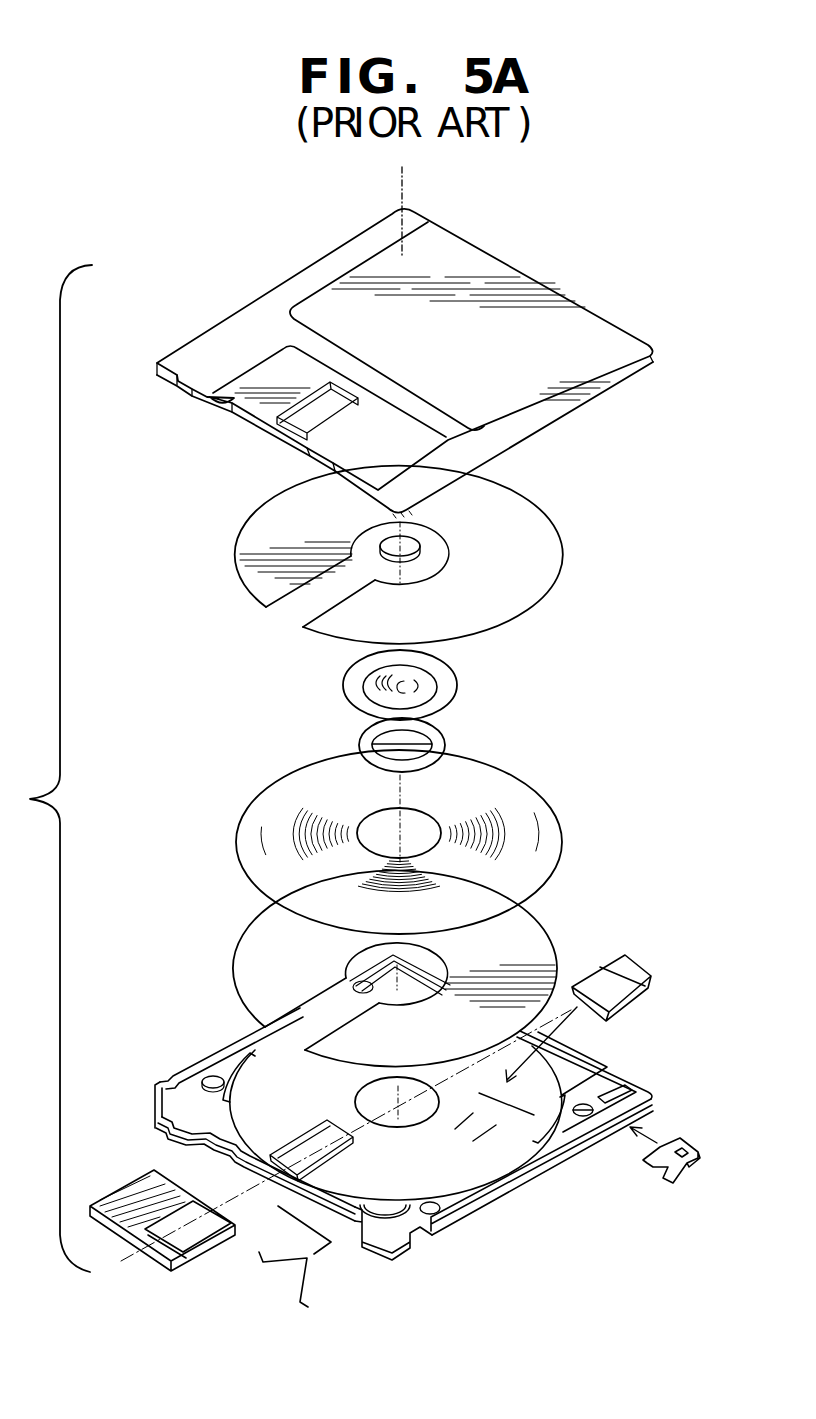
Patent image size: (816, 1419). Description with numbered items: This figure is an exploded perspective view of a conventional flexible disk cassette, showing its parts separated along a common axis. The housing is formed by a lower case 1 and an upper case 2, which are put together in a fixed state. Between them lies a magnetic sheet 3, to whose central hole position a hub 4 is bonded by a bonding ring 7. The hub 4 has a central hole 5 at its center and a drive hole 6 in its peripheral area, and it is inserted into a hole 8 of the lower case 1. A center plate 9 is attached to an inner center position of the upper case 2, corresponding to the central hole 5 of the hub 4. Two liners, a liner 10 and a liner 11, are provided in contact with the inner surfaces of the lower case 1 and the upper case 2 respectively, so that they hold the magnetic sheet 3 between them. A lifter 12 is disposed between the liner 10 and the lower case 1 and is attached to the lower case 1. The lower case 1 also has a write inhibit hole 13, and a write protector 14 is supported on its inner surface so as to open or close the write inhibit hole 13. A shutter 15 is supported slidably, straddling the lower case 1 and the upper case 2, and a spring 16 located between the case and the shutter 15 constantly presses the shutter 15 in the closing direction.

The lower case 1 is at (575, 1156).
The upper case 2 is at (540, 288).
The magnetic sheet 3 is at (545, 813).
The hub 4 is at (453, 691).
The central hole 5 is at (390, 689).
The drive hole 6 is at (410, 671).
The bonding ring 7 is at (360, 741).
The hole 8 is at (430, 1120).
The center plate 9 is at (416, 545).
The liner 10 is at (540, 937).
The liner 11 is at (550, 553).
The lifter 12 is at (648, 984).
The write inhibit hole 13 is at (637, 1087).
The write protector 14 is at (700, 1158).
The shutter 15 is at (173, 1261).
The spring 16 is at (308, 1275).